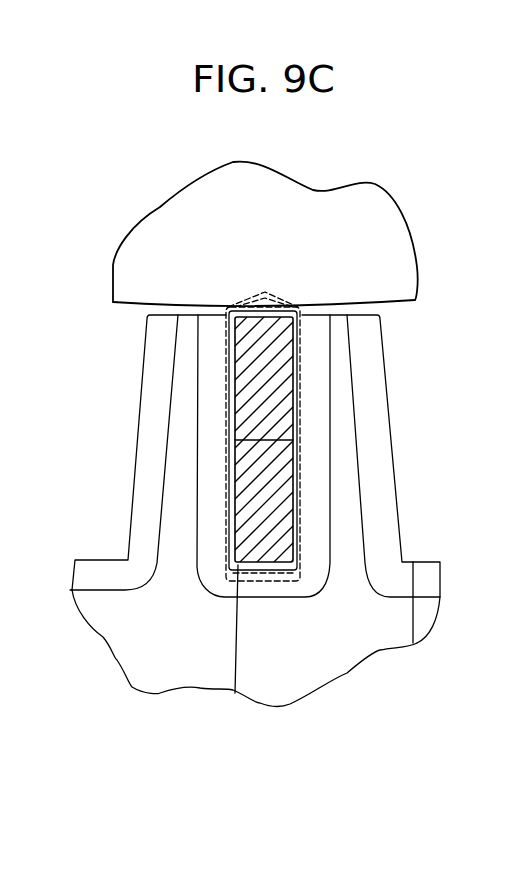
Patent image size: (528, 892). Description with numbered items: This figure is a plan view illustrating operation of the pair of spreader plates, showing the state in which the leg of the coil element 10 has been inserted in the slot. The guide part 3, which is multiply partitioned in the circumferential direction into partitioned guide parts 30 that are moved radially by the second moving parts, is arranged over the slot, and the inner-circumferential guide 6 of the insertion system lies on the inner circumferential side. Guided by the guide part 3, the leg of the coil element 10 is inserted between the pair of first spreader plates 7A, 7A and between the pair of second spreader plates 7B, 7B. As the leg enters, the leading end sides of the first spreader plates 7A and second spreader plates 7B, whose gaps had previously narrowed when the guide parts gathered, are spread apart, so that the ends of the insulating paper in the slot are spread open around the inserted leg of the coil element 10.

The guide part 3 is at (255, 570).
The partitioned guide part 30 is at (357, 652).
The inner-circumferential guide 6 is at (339, 213).
The first spreader plate 7A is at (232, 448).
The second spreader plate 7B is at (300, 313).
The coil element 10 is at (237, 385).